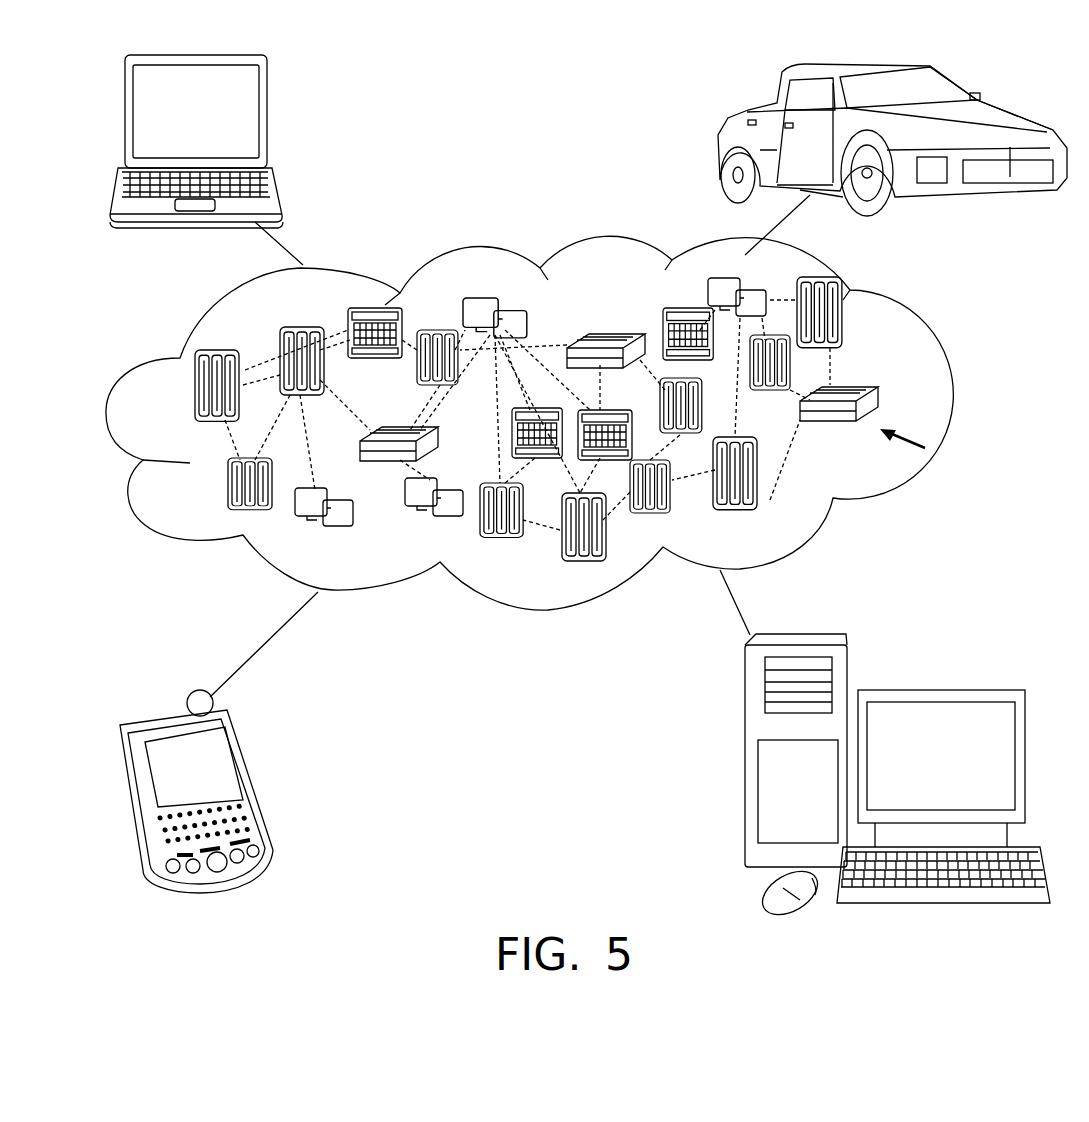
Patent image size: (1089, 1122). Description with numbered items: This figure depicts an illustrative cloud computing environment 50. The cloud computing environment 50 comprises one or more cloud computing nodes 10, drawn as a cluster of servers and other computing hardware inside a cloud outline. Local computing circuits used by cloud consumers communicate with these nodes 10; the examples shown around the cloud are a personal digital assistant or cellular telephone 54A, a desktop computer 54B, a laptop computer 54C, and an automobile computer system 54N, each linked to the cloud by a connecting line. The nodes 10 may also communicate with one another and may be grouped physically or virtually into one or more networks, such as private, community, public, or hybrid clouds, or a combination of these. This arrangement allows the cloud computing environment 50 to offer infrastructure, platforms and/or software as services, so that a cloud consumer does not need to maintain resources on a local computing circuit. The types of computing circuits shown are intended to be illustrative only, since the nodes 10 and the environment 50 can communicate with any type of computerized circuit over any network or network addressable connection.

The cloud computing node 10 is at (923, 456).
The cloud computing environment 50 is at (553, 423).
The personal digital assistant or cellular telephone 54A is at (250, 786).
The desktop computer 54B is at (937, 690).
The laptop computer 54C is at (267, 117).
The automobile computer system 54N is at (720, 138).